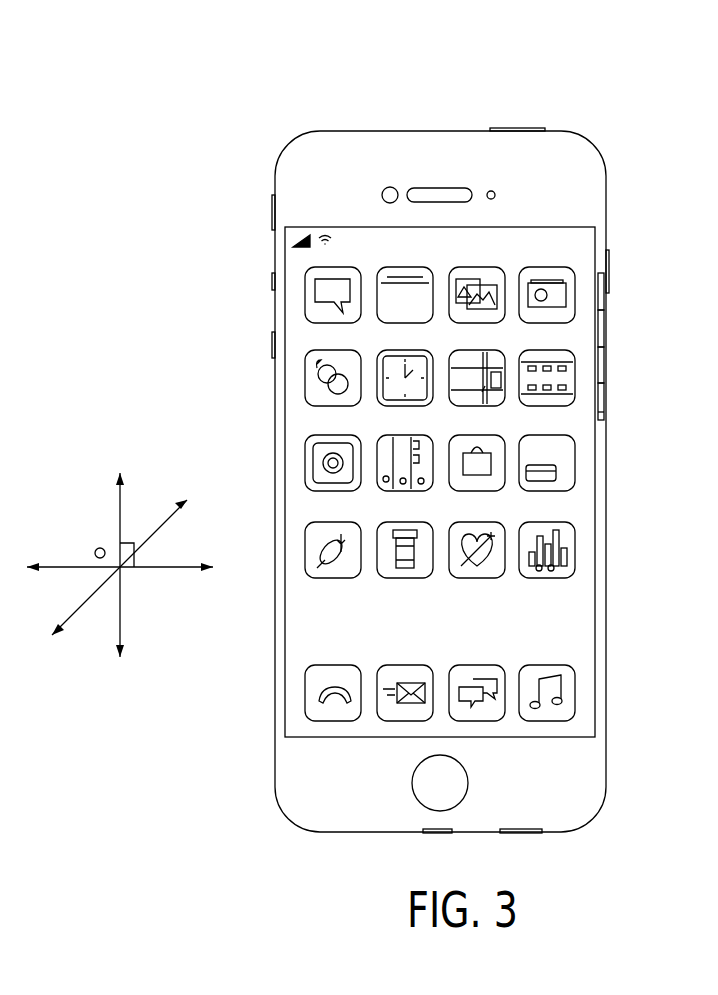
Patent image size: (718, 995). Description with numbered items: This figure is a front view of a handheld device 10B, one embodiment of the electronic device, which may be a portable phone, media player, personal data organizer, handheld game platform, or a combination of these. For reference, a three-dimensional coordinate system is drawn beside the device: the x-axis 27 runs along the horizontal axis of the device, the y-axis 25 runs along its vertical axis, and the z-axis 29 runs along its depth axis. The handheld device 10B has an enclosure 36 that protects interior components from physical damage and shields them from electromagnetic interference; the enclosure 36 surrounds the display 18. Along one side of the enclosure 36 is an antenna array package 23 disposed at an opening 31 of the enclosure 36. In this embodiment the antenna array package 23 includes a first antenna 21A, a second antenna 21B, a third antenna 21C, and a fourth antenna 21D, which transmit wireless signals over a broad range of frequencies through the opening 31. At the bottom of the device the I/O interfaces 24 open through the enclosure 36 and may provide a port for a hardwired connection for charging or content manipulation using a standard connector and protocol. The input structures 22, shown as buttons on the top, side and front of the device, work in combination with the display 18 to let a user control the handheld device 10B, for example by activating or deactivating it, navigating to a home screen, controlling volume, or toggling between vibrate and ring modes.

The handheld device 10B is at (263, 120).
The display 18 is at (598, 558).
The input structures 22 is at (519, 128).
The enclosure 36 is at (607, 213).
The antenna array package 23 is at (608, 285).
The first antenna 21A is at (604, 298).
The second antenna 21B is at (604, 335).
The third antenna 21C is at (604, 365).
The fourth antenna 21D is at (604, 397).
The opening 31 is at (604, 413).
The I/O interfaces 24 is at (437, 833).
The Y-axis 25 is at (125, 438).
The x-axis 27 is at (218, 611).
The z-axis 29 is at (205, 455).